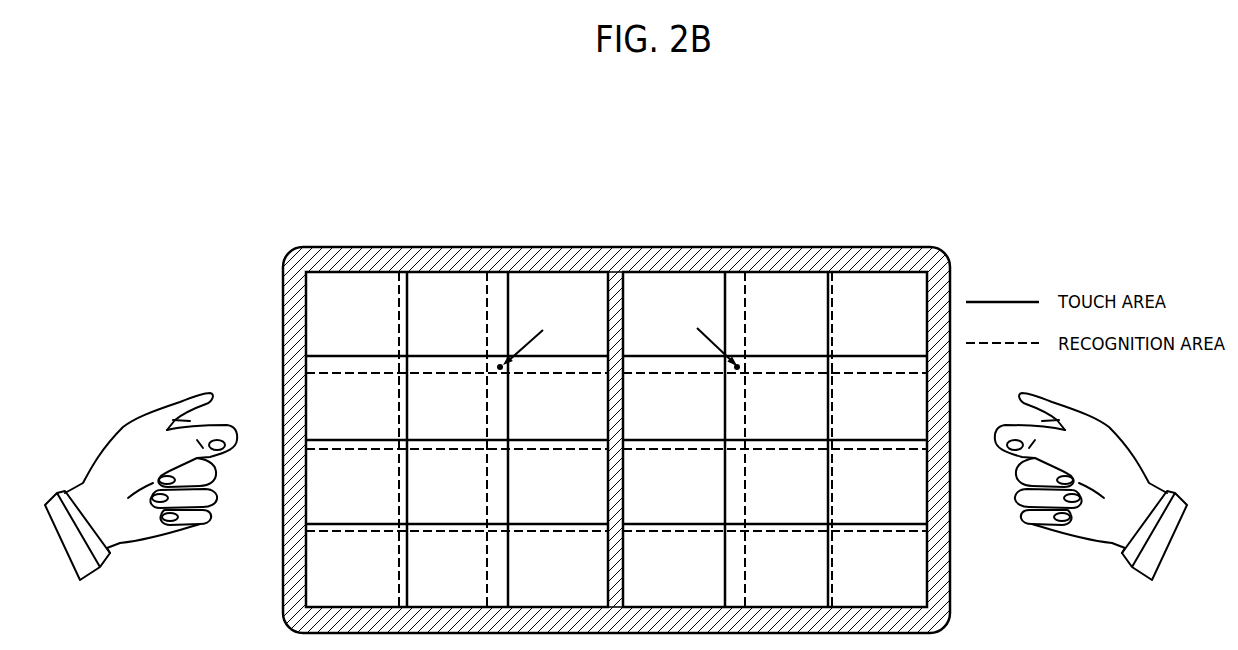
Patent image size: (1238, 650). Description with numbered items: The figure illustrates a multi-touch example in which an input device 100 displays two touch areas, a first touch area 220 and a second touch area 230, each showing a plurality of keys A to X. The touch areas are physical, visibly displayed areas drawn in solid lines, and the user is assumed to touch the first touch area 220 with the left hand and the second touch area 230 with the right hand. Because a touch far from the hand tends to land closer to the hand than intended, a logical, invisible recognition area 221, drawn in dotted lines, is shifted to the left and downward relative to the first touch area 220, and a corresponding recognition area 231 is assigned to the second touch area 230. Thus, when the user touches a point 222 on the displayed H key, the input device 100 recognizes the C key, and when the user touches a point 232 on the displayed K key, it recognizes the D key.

The input device 100 is at (905, 255).
The first touch area 220 is at (565, 272).
The recognition area 221 is at (485, 288).
The point 222 is at (500, 366).
The second touch area 230 is at (845, 272).
The recognition area 231 is at (745, 288).
The point 232 is at (737, 366).